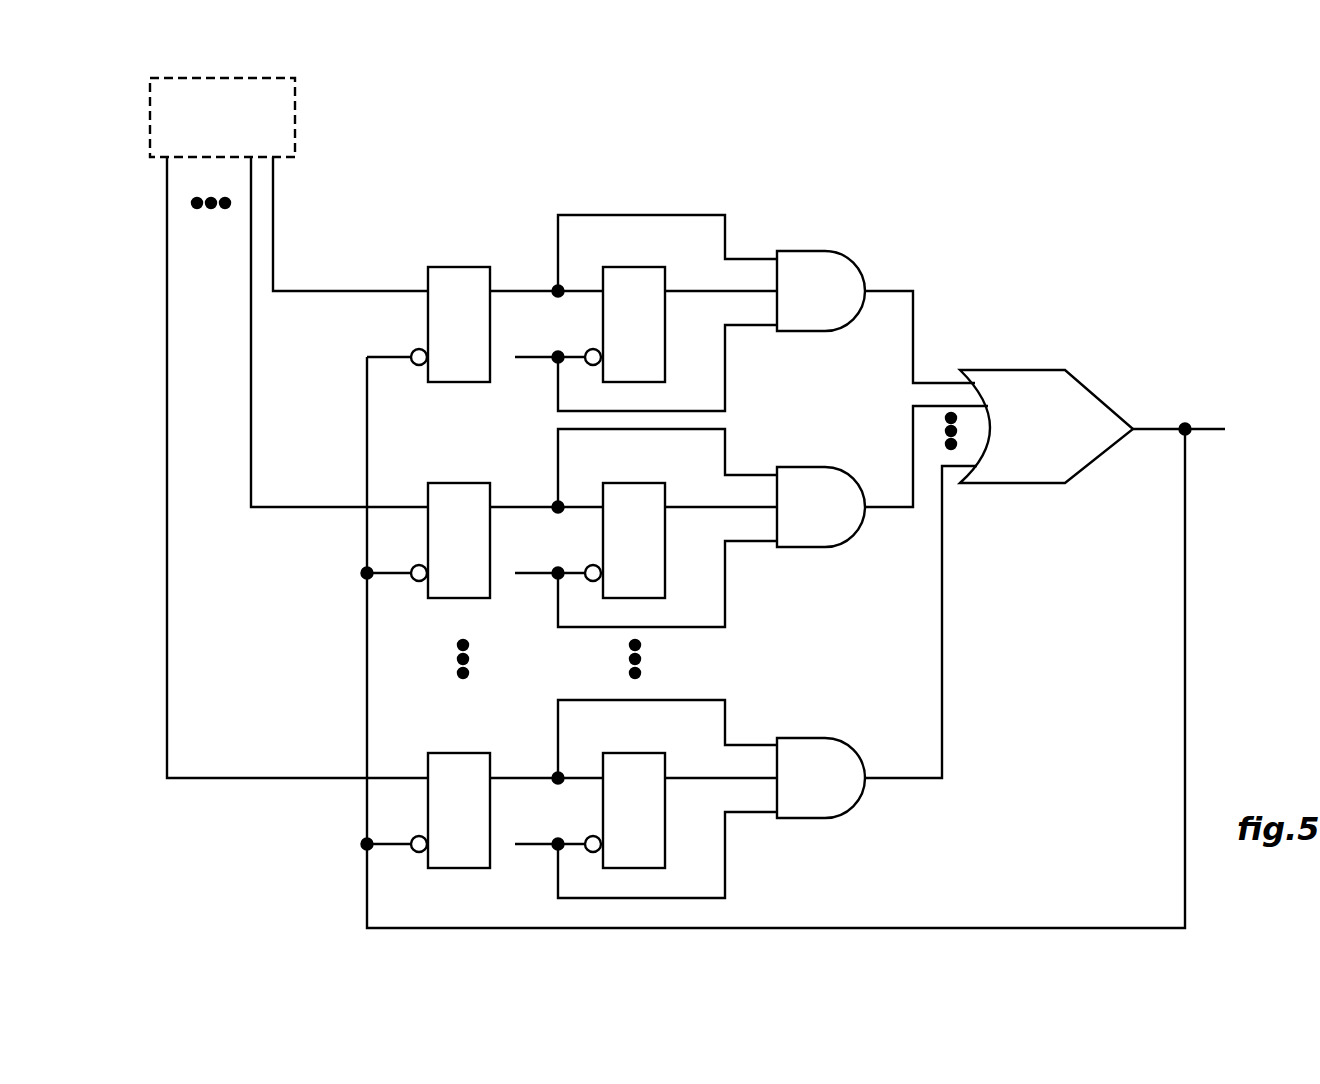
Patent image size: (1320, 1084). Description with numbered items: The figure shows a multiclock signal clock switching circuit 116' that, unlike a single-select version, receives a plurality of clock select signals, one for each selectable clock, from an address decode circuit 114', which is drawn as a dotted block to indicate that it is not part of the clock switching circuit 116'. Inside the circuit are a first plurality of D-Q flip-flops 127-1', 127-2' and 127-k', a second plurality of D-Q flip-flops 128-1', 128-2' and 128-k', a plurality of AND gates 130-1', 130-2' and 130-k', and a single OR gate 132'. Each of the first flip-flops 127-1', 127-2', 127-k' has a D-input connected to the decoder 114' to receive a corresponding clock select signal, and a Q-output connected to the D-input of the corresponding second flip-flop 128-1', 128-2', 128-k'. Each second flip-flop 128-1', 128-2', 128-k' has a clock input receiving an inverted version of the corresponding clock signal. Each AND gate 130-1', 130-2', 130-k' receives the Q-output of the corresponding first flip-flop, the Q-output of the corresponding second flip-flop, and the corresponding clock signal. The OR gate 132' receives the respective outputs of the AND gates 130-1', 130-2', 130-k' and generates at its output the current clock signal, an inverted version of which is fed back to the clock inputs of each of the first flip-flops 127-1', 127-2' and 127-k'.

The address decode circuit 114' is at (222, 105).
The clock switching circuit 116' is at (706, 525).
The first D-Q flip-flop 127-1' is at (485, 310).
The second D-Q flip-flop of the first plurality 127-2' is at (485, 526).
The k-th D-Q flip-flop of the first plurality 127-k' is at (485, 796).
The first D-Q flip-flop of the second plurality 128-1' is at (646, 313).
The second D-Q flip-flop of the second plurality 128-2' is at (646, 528).
The k-th D-Q flip-flop of the second plurality 128-k' is at (646, 799).
The first AND gate 130-1' is at (876, 302).
The second AND gate 130-2' is at (882, 476).
The k-th AND gate 130-k' is at (877, 642).
The OR gate 132' is at (1046, 413).